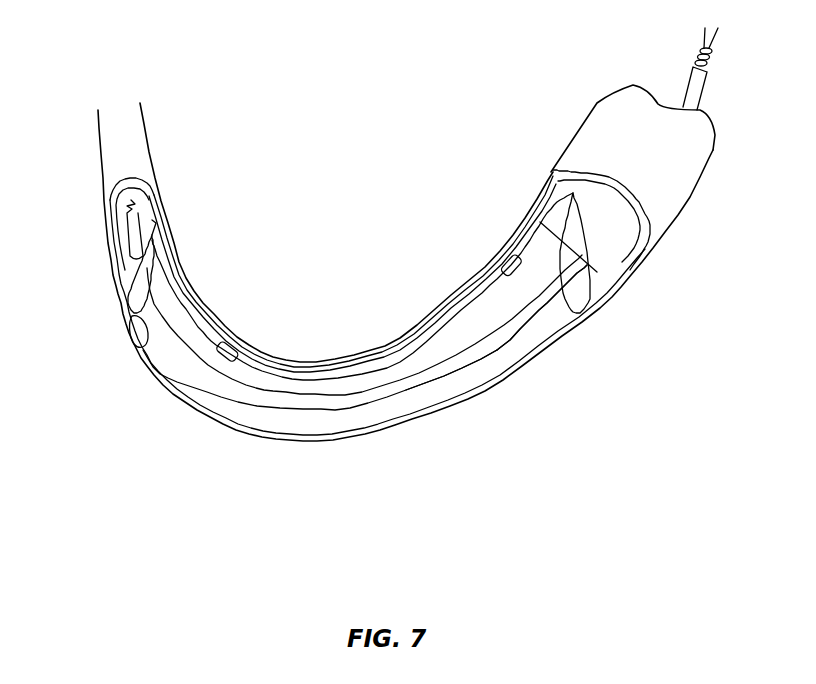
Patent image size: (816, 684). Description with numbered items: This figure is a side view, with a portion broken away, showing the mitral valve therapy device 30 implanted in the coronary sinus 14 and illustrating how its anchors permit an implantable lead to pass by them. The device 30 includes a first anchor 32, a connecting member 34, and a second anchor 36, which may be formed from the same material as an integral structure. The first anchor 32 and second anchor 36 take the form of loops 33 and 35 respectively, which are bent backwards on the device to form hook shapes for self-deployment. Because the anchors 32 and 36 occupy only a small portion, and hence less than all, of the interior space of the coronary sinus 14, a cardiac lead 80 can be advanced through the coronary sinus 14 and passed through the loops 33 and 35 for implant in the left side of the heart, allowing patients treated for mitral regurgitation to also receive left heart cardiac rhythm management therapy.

The coronary sinus 14 is at (672, 188).
The mitral valve therapy device 30 is at (273, 383).
The first anchor 32 is at (127, 284).
The loop 33 is at (147, 340).
The connecting member 34 is at (302, 380).
The loop 35 is at (550, 312).
The second anchor 36 is at (596, 282).
The cardiac lead 80 is at (478, 360).